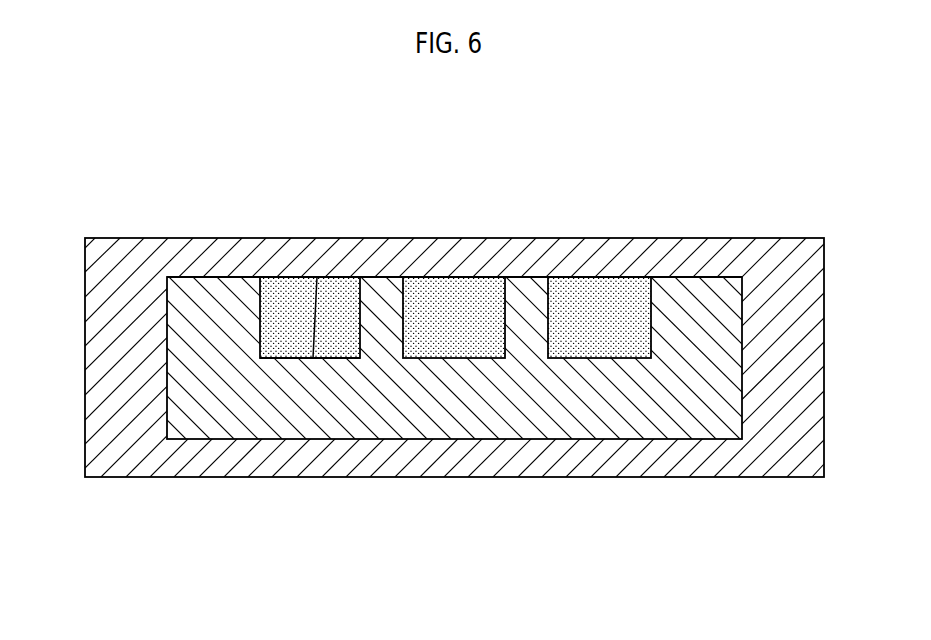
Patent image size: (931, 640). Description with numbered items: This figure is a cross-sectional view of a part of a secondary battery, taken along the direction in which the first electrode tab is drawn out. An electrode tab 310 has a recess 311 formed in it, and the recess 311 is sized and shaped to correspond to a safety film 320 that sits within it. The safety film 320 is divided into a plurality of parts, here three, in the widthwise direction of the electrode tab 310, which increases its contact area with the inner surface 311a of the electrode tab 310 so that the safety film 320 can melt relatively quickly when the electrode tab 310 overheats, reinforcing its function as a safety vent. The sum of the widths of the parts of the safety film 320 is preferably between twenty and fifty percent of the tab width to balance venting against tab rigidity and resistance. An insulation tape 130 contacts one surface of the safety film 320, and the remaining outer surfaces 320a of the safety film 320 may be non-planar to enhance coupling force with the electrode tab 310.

The insulation tape 130 is at (176, 250).
The electrode tab 310 is at (683, 293).
The recess 311 is at (253, 320).
The inner surface 311a is at (318, 277).
The safety film 320 is at (270, 303).
The outer surfaces 320a is at (280, 358).